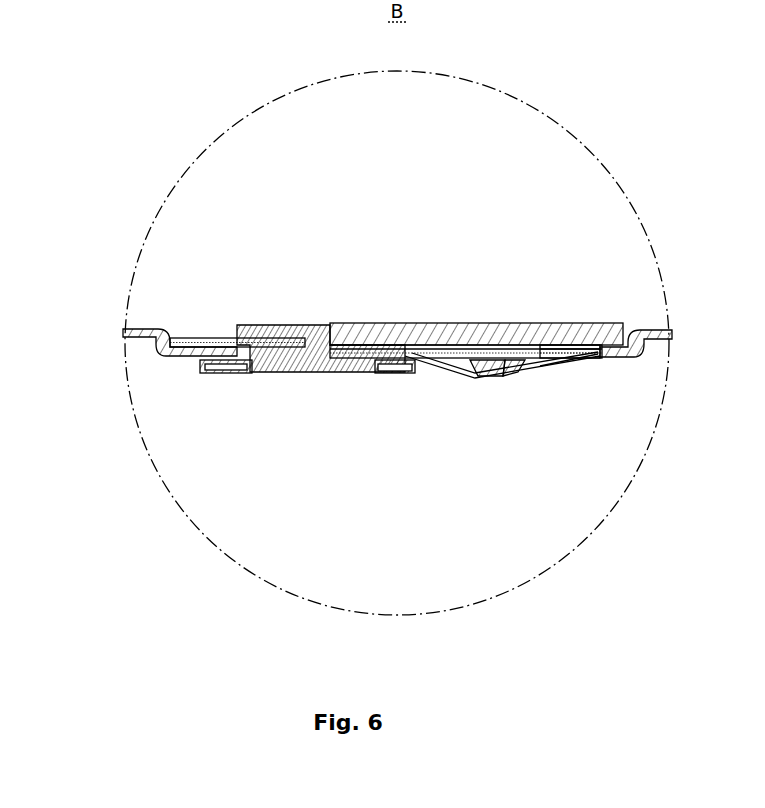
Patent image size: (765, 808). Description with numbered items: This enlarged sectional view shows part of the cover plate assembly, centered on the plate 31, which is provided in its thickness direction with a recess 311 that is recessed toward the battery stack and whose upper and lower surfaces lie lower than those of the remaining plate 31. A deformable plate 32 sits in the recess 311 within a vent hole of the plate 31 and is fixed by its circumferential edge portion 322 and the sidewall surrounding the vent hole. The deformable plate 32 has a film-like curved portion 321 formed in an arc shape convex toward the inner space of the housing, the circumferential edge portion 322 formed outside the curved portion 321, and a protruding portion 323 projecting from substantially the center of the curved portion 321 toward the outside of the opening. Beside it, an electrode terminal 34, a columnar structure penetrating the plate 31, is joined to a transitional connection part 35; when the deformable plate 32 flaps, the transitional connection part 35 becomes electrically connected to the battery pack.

The plate 31 is at (164, 354).
The recess 311 is at (206, 330).
The deformable plate 32 is at (510, 430).
The curved portion 321 is at (546, 366).
The circumferential edge portion 322 is at (577, 409).
The protruding portion 323 is at (500, 378).
The electrode terminal 34 is at (300, 325).
The transitional connection part 35 is at (380, 323).